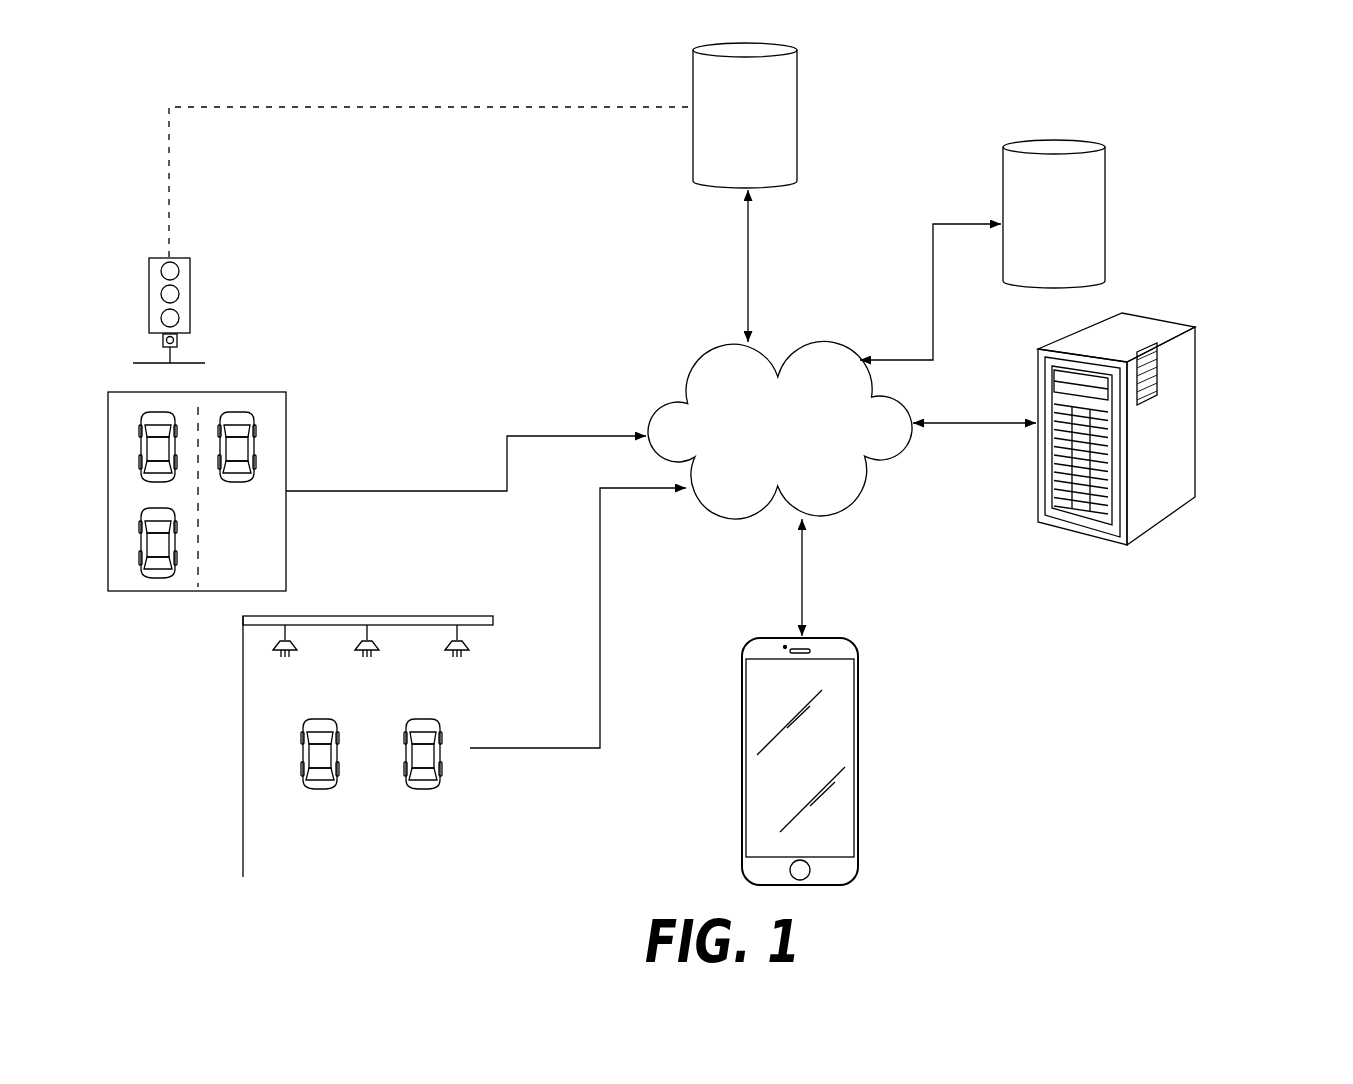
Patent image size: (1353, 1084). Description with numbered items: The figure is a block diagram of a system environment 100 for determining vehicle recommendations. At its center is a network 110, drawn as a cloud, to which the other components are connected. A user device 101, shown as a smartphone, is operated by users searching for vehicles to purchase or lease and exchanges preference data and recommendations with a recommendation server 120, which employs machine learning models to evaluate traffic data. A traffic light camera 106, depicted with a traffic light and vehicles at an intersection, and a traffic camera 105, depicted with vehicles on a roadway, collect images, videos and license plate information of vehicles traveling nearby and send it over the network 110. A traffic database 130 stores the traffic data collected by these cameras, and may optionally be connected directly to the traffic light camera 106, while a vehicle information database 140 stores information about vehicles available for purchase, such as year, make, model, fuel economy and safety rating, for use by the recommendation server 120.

The system environment 100 is at (1203, 99).
The user device 101 is at (858, 757).
The traffic camera 105 is at (243, 772).
The traffic light camera 106 is at (286, 400).
The network 110 is at (876, 496).
The recommendation server 120 is at (1195, 423).
The traffic database 130 is at (797, 107).
The vehicle information database 140 is at (1105, 224).